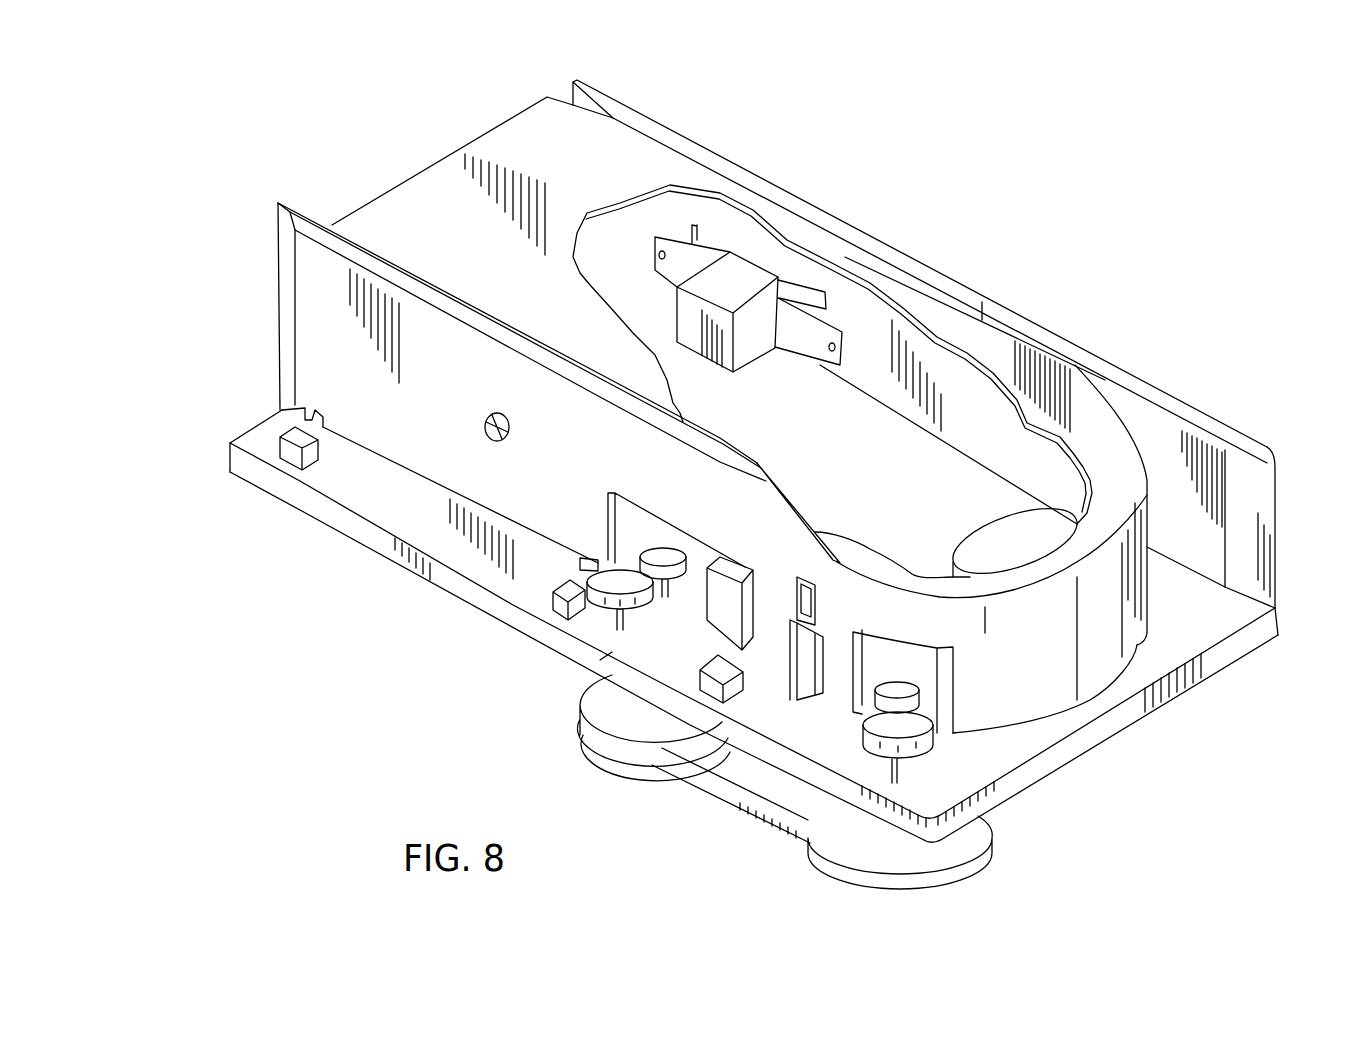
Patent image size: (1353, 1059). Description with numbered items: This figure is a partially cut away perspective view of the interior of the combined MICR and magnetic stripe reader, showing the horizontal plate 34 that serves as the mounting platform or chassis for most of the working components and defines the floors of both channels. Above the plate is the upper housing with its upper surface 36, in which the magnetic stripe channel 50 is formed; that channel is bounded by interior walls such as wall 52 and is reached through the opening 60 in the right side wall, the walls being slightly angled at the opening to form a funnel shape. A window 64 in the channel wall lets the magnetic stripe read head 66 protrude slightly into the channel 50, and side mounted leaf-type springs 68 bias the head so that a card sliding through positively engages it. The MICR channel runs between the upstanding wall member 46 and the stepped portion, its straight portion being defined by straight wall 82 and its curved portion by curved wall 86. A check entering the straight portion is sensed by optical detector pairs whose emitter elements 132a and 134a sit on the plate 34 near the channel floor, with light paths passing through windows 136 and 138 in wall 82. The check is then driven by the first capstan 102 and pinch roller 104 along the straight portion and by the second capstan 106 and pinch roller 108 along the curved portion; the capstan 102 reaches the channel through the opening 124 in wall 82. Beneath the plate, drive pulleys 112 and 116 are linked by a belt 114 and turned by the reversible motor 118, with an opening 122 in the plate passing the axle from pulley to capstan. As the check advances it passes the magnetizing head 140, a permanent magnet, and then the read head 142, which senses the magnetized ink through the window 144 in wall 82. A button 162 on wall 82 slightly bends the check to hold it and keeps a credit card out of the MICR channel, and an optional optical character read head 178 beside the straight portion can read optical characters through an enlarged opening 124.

The plate 34 is at (1213, 630).
The upper surface 36 is at (453, 170).
The upstanding wall member 46 is at (303, 243).
The magnetic stripe channel 50 is at (983, 320).
The wall 52 is at (1177, 433).
The opening 60 is at (583, 100).
The opening or window 64 is at (805, 297).
The magnetic stripe read head 66 is at (745, 273).
The leaf-type springs 68 is at (673, 265).
The straight wall 82 is at (337, 313).
The curved wall 86 is at (1113, 643).
The first capstan 102 is at (667, 550).
The pinch roller 104 is at (613, 587).
The second capstan 106 is at (907, 690).
The pinch roller 108 is at (917, 725).
The drive pulley 112 is at (582, 708).
The belt 114 is at (727, 793).
The drive pulley 116 is at (988, 838).
The reversible motor 118 is at (998, 543).
The opening 122 is at (605, 656).
The opening 124 is at (628, 510).
The emitter element 132a is at (292, 450).
The emitter element 134a is at (557, 602).
The opening or window 136 is at (315, 410).
The opening or window 138 is at (598, 563).
The magnetizing head 140 is at (717, 668).
The read head 142 is at (807, 677).
The opening or window 144 is at (815, 628).
The button 162 is at (490, 417).
The optical character read head 178 is at (732, 580).